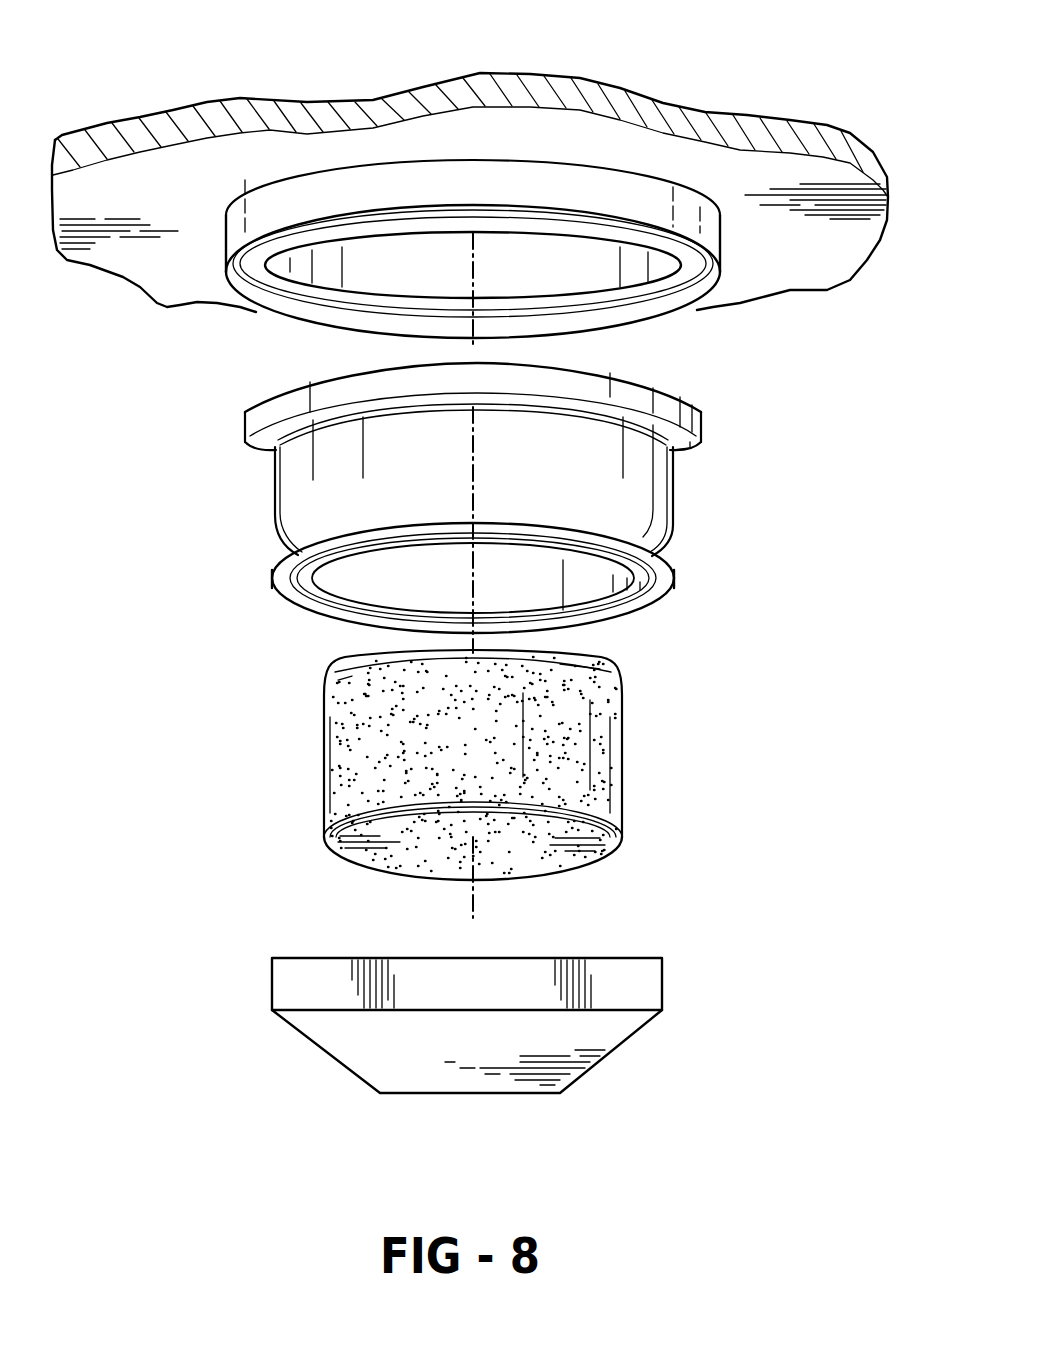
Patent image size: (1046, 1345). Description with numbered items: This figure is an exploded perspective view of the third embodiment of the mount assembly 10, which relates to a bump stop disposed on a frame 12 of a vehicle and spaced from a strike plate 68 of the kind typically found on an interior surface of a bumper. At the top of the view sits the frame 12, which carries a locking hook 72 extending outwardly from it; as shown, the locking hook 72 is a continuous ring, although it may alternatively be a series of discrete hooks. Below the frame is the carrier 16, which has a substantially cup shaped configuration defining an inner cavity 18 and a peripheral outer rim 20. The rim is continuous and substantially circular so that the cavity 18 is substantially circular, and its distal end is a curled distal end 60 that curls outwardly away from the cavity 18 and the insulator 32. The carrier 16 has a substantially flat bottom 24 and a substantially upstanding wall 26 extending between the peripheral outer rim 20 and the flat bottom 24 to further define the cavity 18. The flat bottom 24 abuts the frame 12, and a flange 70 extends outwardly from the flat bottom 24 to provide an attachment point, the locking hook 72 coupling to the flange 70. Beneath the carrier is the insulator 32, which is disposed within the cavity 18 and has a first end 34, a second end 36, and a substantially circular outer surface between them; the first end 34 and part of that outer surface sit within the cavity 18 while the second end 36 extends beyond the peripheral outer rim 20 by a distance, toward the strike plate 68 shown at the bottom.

The mount assembly 10 is at (201, 656).
The frame 12 is at (470, 205).
The carrier 16 is at (673, 497).
The inner cavity 18 is at (331, 583).
The peripheral outer rim 20 is at (644, 597).
The flat bottom 24 is at (597, 373).
The upstanding wall 26 is at (290, 474).
The insulator 32 is at (600, 743).
The first end 34 is at (577, 656).
The second end 36 is at (527, 847).
The curled distal end 60 is at (641, 578).
The strike plate 68 is at (363, 1052).
The flange 70 is at (687, 448).
The locking hook 72 is at (403, 228).